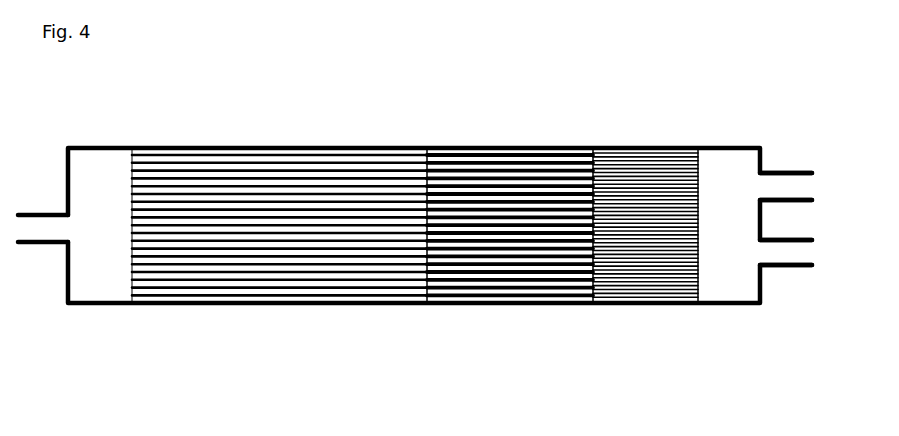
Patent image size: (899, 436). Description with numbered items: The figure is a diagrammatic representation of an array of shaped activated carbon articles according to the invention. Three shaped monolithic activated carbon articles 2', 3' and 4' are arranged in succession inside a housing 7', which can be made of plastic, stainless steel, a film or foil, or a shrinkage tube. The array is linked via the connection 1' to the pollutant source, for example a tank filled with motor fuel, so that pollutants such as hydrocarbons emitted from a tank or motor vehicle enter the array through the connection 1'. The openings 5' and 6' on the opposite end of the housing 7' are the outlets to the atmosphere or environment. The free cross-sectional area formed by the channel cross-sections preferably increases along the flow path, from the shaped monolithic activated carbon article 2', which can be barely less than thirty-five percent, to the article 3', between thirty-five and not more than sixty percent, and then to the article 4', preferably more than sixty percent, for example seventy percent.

The connection 1' is at (41, 293).
The shaped monolithic activated carbon article 2' is at (279, 273).
The shaped monolithic activated carbon article 3' is at (510, 273).
The shaped monolithic activated carbon article 4' is at (645, 285).
The opening 5' is at (806, 291).
The opening 6' is at (812, 207).
The housing 7' is at (440, 173).